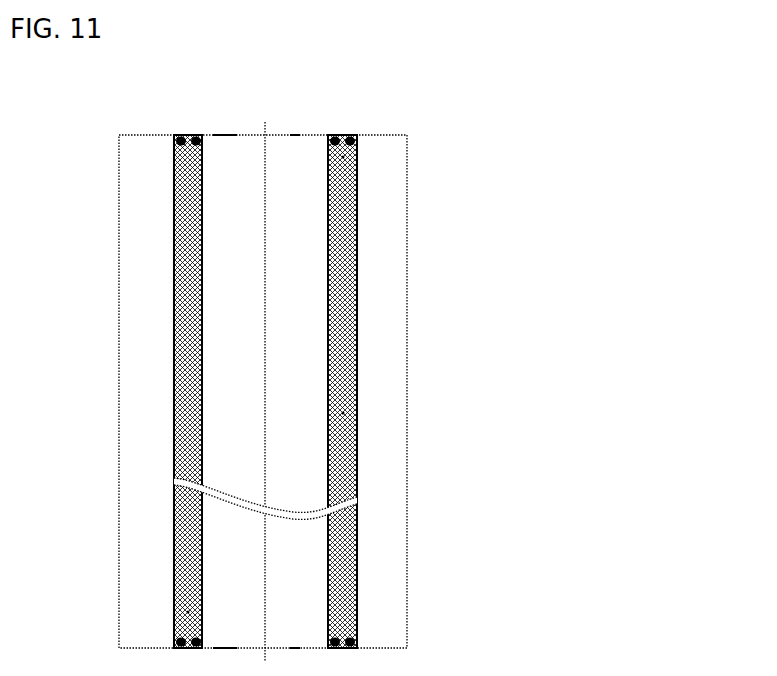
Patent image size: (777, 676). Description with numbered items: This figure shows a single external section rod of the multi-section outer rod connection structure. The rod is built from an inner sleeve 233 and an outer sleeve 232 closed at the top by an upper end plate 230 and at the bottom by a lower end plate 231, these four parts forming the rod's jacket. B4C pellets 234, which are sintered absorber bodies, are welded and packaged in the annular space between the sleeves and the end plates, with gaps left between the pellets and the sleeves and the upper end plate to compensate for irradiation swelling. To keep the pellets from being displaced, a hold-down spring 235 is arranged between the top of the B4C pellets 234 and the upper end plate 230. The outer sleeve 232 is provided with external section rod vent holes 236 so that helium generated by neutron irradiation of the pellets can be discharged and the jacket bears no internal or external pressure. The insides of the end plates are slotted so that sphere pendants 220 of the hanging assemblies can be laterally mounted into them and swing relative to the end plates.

The sphere pendant 220 is at (355, 135).
The upper end plate 230 is at (176, 136).
The lower end plate 231 is at (178, 643).
The outer sleeve 232 is at (178, 280).
The inner sleeve 233 is at (357, 310).
The B4C pellet 234 is at (357, 413).
The hold-down spring 235 is at (357, 157).
The external section rod vent hole 236 is at (178, 612).